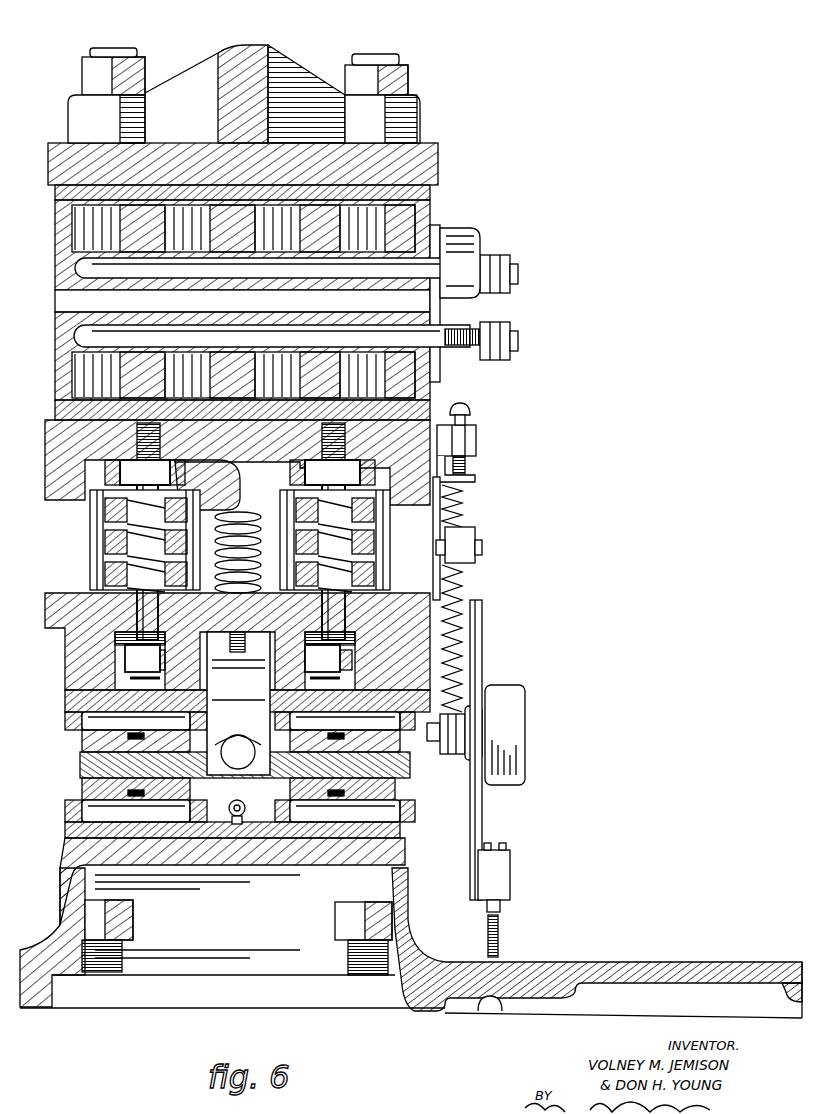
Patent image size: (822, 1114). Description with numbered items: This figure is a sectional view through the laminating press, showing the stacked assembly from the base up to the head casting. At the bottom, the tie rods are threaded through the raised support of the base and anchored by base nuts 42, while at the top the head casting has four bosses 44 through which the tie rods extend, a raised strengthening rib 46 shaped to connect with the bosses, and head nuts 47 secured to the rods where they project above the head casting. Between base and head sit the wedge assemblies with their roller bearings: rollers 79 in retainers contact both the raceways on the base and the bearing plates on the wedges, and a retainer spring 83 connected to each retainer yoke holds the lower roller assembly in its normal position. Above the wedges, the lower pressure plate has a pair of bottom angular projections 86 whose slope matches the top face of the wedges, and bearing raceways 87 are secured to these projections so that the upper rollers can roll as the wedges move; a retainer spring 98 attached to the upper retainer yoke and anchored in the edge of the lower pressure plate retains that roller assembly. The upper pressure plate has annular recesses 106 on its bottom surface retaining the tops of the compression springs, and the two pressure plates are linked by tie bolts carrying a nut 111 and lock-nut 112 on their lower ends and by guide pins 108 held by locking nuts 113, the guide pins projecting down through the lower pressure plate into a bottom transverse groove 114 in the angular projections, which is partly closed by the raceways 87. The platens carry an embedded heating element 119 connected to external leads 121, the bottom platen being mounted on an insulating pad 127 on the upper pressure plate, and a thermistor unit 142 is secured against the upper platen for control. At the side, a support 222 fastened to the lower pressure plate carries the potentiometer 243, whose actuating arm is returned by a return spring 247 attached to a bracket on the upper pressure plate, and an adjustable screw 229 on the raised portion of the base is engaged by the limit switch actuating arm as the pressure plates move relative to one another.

The base nuts 42 is at (133, 925).
The bosses 44 is at (70, 100).
The raised strengthening rib 46 is at (265, 52).
The head nuts 47 is at (145, 85).
The rollers 79 is at (95, 800).
The retainer spring 83 is at (245, 806).
The bottom angular projections 86 is at (80, 668).
The bearing raceways 87 is at (68, 703).
The retainer spring 98 is at (238, 703).
The annular recesses 106 is at (200, 465).
The guide pins 108 is at (140, 527).
The nut 111 is at (118, 644).
The lock-nut 112 is at (238, 661).
The locking nuts 113 is at (240, 531).
The bottom transverse groove 114 is at (120, 680).
The heating element 119 is at (155, 332).
The external leads 121 is at (355, 640).
The insulating pad 127 is at (440, 410).
The thermistor unit 142 is at (470, 242).
The support 222 is at (478, 830).
The adjustable screw 229 is at (498, 930).
The potentiometer 243 is at (525, 690).
The return spring 247 is at (460, 672).